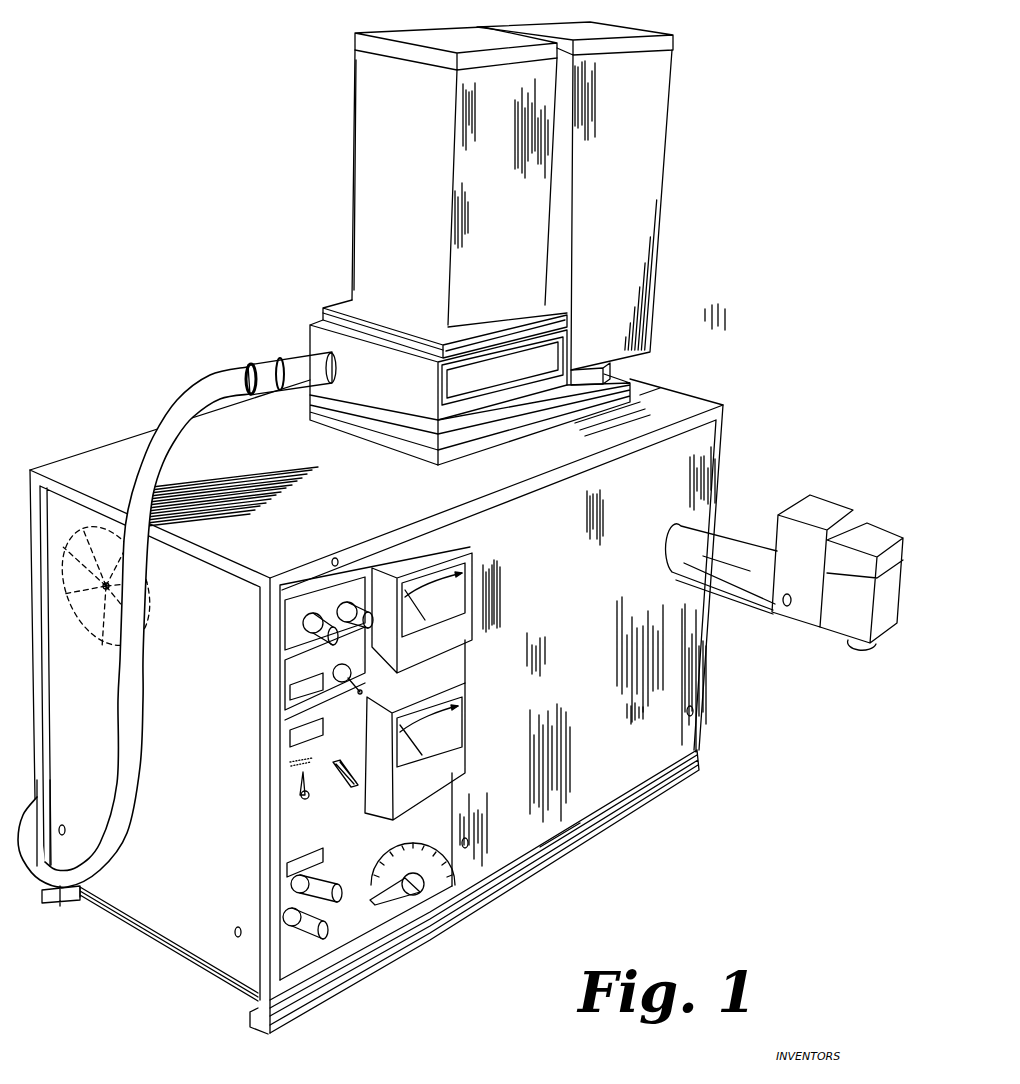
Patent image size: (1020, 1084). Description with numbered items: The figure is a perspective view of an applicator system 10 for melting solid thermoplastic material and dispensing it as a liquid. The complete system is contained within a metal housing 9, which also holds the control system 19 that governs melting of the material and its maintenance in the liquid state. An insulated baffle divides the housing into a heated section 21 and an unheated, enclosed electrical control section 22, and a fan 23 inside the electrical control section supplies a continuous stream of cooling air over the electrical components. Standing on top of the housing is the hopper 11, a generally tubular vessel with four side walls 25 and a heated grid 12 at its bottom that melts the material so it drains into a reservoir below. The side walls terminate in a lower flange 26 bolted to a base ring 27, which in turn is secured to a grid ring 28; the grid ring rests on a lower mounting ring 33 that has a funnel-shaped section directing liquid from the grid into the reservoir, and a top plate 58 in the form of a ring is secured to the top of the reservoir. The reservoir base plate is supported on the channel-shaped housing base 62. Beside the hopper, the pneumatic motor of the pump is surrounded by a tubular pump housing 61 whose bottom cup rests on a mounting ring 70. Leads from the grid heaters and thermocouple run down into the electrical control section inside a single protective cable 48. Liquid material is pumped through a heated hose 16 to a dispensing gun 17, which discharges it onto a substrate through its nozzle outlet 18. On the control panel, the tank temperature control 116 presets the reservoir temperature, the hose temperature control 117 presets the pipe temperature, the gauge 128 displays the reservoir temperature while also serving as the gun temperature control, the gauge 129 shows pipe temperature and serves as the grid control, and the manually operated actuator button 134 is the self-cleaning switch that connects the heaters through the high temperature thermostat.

The housing 9 is at (118, 460).
The applicator system 10 is at (805, 171).
The hopper 11 is at (368, 170).
The heated grid 12 is at (389, 383).
The heated hose 16 is at (694, 562).
The dispensing gun 17 is at (848, 495).
The nozzle outlet 18 is at (850, 650).
The control system 19 is at (350, 920).
The heated section 21 is at (592, 585).
The electrical control section 22 is at (375, 763).
The fan 23 is at (101, 628).
The side walls 25 is at (433, 175).
The lower flange 26 is at (416, 325).
The base ring 27 is at (470, 347).
The grid ring 28 is at (320, 373).
The lower mounting ring 33 is at (416, 438).
The cable 48 is at (178, 427).
The top plate 58 is at (640, 393).
The pump housing 61 is at (657, 173).
The housing base 62 is at (560, 848).
The mounting ring 70 is at (590, 376).
The tank temperature control 116 is at (470, 857).
The hose temperature control 117 is at (286, 828).
The gauge 128 is at (460, 762).
The gauge 129 is at (466, 603).
The actuator button 134 is at (283, 912).